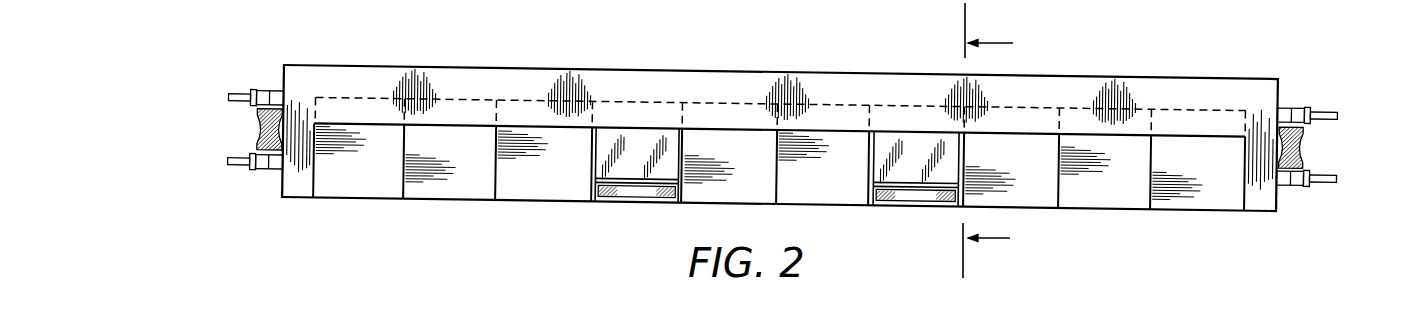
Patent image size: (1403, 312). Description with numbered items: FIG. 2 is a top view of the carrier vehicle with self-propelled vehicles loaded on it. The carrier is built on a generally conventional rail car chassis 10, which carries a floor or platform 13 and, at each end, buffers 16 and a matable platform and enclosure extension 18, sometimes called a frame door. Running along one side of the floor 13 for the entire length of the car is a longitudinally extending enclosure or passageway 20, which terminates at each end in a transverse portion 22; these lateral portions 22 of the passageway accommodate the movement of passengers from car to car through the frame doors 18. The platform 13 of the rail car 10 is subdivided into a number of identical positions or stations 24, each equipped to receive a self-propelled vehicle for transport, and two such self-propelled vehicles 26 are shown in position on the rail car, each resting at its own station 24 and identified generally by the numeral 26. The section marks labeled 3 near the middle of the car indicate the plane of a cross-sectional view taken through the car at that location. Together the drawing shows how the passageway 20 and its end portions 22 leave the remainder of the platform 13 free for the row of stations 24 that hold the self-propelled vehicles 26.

The rail car chassis 10 is at (1102, 73).
The floor or platform 13 is at (1126, 192).
The buffers 16 is at (252, 168).
The matable platform and enclosure extension 18 is at (258, 122).
The longitudinally extending enclosure or passageway 20 is at (748, 75).
The transverse portions of the passageway 22 is at (297, 101).
The stations 24 is at (378, 186).
The self-propelled vehicles 26 is at (623, 198).
The section line 3- 3 is at (988, 140).